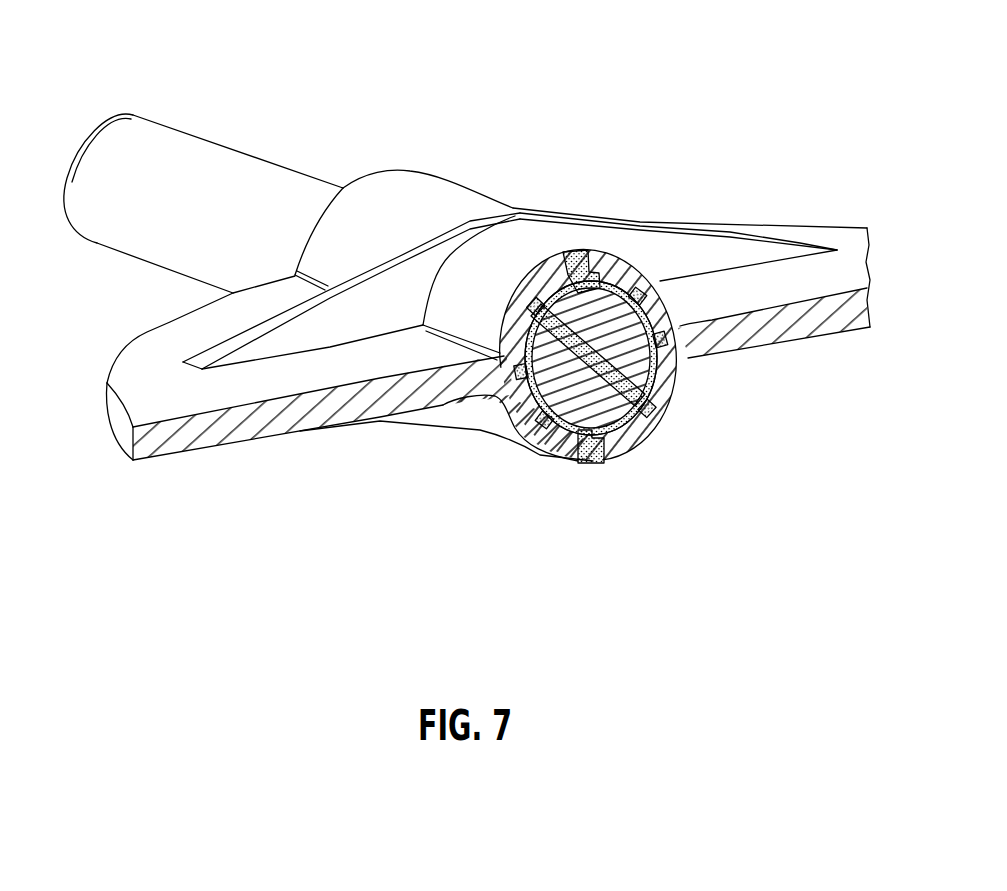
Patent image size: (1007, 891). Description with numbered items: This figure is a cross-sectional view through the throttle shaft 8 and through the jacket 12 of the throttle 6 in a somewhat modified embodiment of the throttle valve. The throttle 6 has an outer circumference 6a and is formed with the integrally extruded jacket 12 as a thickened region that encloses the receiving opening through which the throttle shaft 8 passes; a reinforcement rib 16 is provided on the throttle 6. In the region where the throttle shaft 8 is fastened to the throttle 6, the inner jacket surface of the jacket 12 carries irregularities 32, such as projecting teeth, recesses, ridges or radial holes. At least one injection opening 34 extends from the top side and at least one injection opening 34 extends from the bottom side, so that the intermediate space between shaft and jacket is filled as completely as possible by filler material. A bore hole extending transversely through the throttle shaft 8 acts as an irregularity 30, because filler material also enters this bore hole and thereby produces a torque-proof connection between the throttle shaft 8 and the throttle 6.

The throttle 6 is at (140, 363).
The circumference 6a is at (125, 440).
The throttle shaft 8 is at (223, 170).
The jacket 12 is at (640, 265).
The reinforcement rib 16 is at (620, 233).
The irregularity 30 is at (610, 430).
The irregularities 32 is at (520, 413).
The injection opening 34 is at (576, 252).